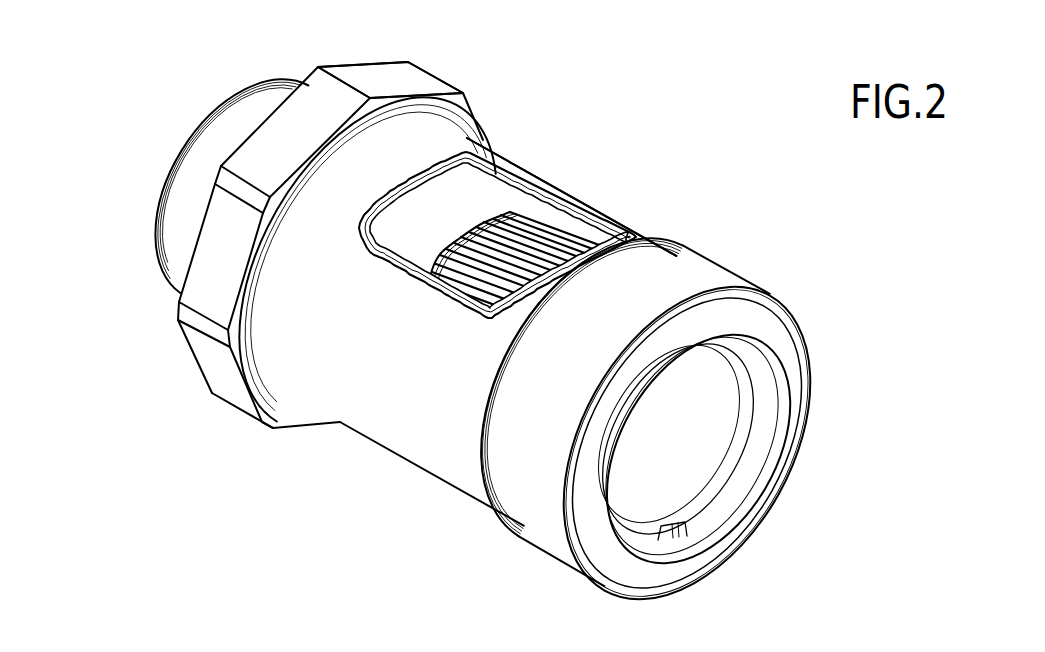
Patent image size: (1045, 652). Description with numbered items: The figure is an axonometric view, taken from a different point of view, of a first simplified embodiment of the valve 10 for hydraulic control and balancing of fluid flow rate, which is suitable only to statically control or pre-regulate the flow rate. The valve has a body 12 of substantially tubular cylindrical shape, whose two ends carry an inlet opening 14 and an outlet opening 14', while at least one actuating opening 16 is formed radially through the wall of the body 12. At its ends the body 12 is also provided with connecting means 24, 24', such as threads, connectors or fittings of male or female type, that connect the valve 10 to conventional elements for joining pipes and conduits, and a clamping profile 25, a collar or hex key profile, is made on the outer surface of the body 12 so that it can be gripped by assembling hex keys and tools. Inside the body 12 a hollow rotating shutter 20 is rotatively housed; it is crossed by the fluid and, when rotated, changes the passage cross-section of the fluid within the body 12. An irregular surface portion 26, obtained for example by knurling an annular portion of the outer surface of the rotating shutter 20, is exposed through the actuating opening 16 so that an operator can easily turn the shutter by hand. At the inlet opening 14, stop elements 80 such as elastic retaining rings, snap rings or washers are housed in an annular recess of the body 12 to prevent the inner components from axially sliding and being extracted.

The valve for hydraulic control and balancing of fluid flow rate 10 is at (250, 567).
The body 12 is at (573, 195).
The inlet opening 14 is at (716, 449).
The outlet opening 14' is at (197, 148).
The actuating opening 16 is at (475, 168).
The hollow rotating shutter 20 is at (454, 228).
The connecting means 24 is at (671, 436).
The connecting means 24' is at (174, 186).
The clamping profile 25 is at (400, 75).
The irregular surface portion 26 is at (430, 293).
The stop elements 80 is at (690, 520).